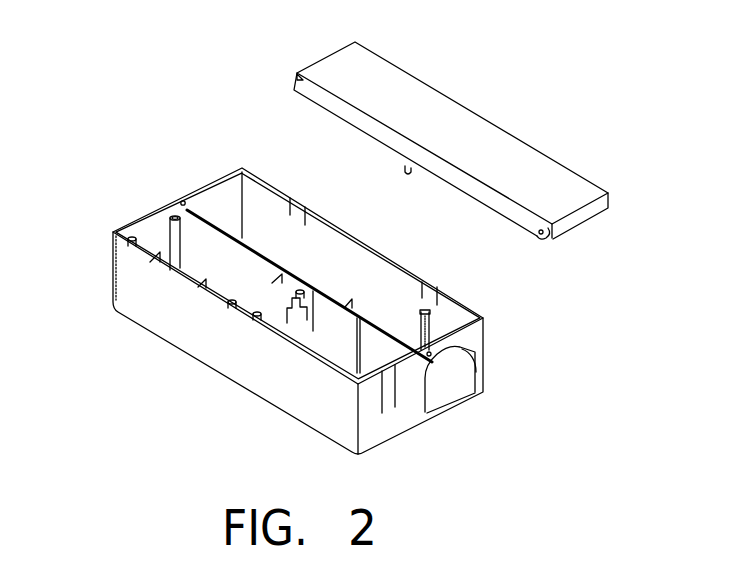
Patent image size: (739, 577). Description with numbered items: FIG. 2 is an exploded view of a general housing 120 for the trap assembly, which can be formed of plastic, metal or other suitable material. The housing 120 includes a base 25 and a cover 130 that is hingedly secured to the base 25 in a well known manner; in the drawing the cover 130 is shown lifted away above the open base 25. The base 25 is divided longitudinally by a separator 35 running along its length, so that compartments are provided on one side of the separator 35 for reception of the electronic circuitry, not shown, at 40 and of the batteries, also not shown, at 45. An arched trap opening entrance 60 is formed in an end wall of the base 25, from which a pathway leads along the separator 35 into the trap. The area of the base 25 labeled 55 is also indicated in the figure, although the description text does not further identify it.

The housing 120 is at (183, 399).
The cover 130 is at (480, 148).
The base 25 is at (178, 312).
The electronic circuitry compartment 40 is at (197, 252).
The battery compartment 45 is at (383, 347).
The partition wall 55 is at (378, 293).
The separator 35 is at (339, 333).
The trap opening entrance 60 is at (442, 381).